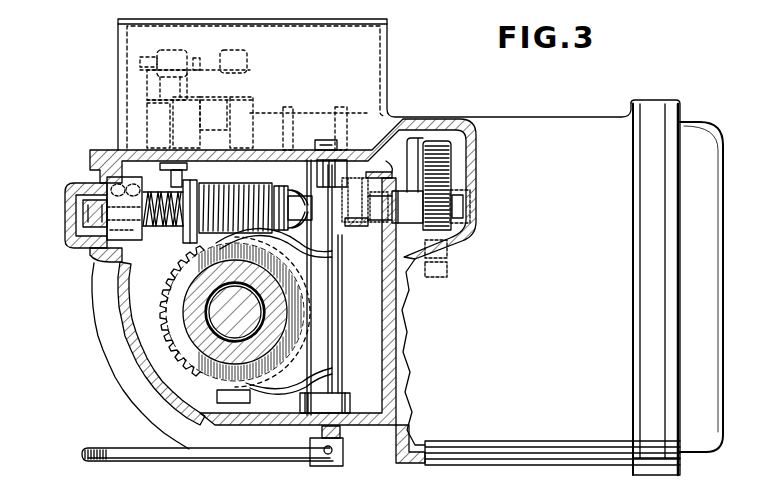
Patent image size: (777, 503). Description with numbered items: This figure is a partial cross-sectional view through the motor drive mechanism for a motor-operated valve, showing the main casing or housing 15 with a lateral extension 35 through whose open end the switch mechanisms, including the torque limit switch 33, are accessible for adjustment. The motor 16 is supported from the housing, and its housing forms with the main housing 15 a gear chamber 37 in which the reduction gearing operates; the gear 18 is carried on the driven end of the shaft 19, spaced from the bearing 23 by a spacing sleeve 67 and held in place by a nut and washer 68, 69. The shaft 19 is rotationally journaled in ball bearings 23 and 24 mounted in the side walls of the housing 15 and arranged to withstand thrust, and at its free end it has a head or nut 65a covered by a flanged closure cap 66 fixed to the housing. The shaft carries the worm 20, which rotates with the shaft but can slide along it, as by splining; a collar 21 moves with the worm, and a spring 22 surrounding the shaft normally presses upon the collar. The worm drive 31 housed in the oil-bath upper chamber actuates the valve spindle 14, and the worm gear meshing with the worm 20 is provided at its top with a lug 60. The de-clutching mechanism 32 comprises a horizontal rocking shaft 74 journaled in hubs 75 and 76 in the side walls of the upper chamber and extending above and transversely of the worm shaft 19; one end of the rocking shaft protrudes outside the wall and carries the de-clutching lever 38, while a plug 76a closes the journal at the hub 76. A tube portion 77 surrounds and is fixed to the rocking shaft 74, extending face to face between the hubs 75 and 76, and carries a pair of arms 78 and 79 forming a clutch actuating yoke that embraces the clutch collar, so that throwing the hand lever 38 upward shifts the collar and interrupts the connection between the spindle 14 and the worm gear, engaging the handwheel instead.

The threaded reciprocating valve stem or spindle 14 is at (187, 352).
The casing or housing 15 is at (185, 258).
The motor 16 is at (580, 137).
The speed reducing gear 18 is at (430, 153).
The shaft 19 is at (415, 143).
The worm 20 is at (240, 183).
The collar 21 is at (182, 233).
The spring 22 is at (157, 214).
The bearing 23 is at (373, 242).
The bearing 24 is at (115, 192).
The worm drive 31 is at (163, 288).
The de-clutching mechanism 32 is at (290, 200).
The torque limit switch 33 is at (177, 44).
The lateral extension 35 is at (388, 47).
The gear chamber 37 is at (350, 212).
The de-clutching lever 38 is at (151, 456).
The lug 60 is at (167, 338).
The head or nut 65a is at (80, 188).
The flanged closure cap 66 is at (72, 212).
The spacing sleeve 67 is at (409, 225).
The nut 68 is at (502, 154).
The washer 69 is at (456, 196).
The horizontal rocking shaft 74 is at (341, 441).
The hub 75 is at (333, 403).
The hub 76 is at (327, 172).
The plug 76a is at (324, 142).
The tube portion 77 is at (327, 330).
The arm 78 is at (254, 402).
The arm 79 is at (309, 250).